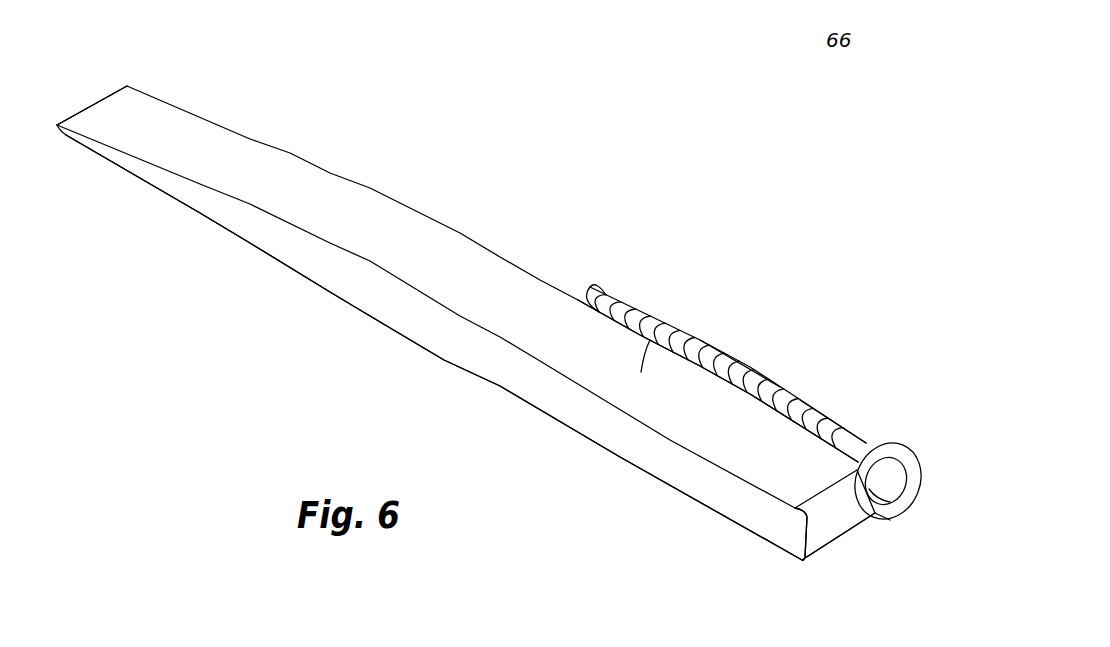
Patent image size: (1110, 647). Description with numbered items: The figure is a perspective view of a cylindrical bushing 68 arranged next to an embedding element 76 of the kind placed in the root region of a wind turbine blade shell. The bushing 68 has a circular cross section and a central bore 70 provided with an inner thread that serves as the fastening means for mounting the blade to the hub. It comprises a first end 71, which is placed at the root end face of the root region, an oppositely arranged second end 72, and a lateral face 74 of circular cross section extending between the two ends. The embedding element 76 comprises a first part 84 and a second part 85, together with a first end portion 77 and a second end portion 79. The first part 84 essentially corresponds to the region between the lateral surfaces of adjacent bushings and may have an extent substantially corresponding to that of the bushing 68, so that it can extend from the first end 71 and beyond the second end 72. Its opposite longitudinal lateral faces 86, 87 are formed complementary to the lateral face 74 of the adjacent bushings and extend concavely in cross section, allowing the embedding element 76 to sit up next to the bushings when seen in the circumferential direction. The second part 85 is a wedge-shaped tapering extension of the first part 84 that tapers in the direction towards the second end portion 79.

The bushing 68 is at (788, 382).
The central bore 70 is at (873, 480).
The first end 71 is at (866, 441).
The second end 72 is at (610, 295).
The lateral face 74 is at (822, 410).
The embedding element 76 is at (667, 318).
The first end portion 77 is at (830, 535).
The second end portion 79 is at (93, 107).
The first part 84 is at (750, 367).
The second part 85 is at (300, 185).
The first longitudinal lateral face 86 is at (707, 483).
The second longitudinal lateral face 87 is at (888, 518).